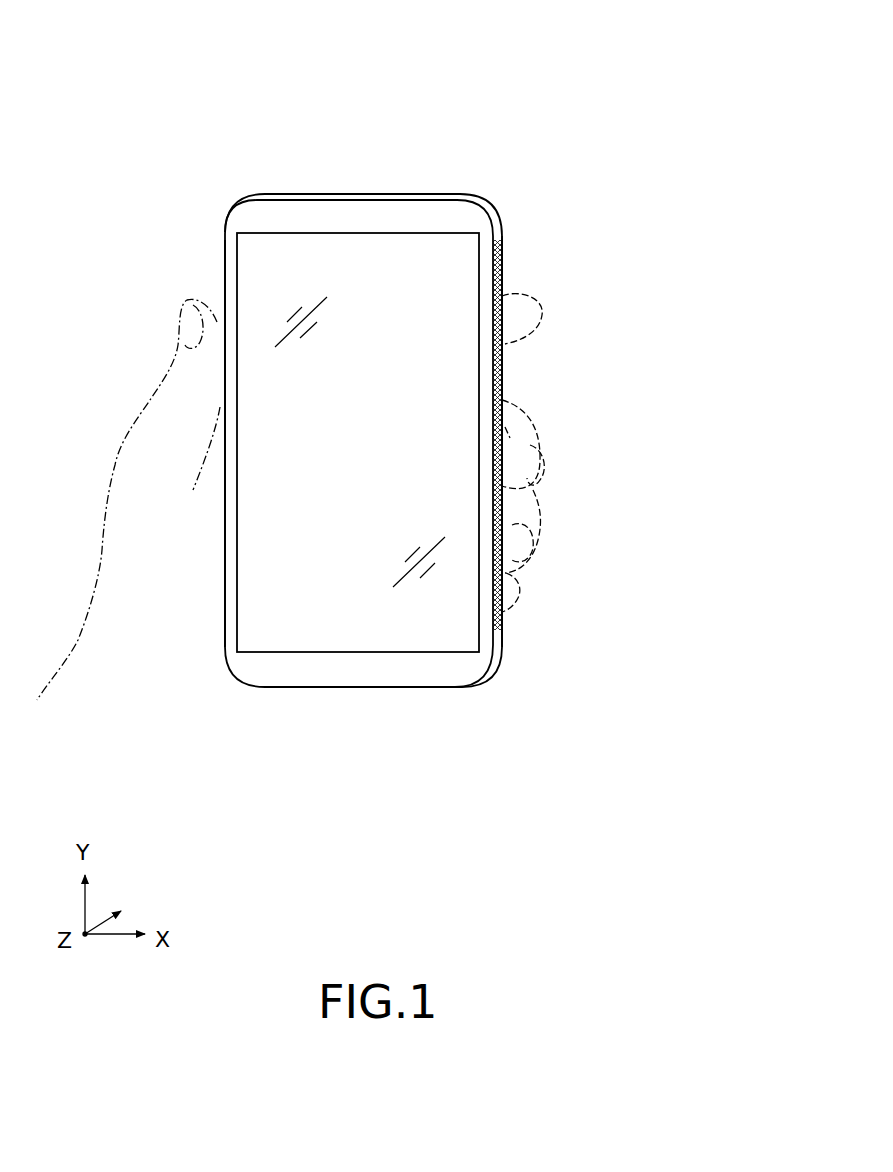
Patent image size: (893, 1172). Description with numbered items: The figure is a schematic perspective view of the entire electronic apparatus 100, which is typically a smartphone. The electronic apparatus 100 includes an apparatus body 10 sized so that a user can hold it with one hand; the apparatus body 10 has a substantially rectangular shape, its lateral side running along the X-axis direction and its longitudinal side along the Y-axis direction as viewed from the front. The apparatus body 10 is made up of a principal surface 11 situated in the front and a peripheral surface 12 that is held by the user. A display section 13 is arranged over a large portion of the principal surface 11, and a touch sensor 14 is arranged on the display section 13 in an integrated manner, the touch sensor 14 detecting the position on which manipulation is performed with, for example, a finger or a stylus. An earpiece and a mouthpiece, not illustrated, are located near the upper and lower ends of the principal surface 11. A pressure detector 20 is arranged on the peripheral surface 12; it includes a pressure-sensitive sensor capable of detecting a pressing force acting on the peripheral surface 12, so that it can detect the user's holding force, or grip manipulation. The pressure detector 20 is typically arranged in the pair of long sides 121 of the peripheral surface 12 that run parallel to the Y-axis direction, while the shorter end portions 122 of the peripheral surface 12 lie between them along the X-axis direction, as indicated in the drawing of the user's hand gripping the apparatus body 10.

The electronic apparatus 100 is at (257, 96).
The apparatus body 10 is at (226, 212).
The principal surface 11 is at (318, 216).
The peripheral surface 12 is at (576, 212).
The long sides 121 is at (500, 242).
The end portion 122 is at (450, 194).
The display section 13 is at (272, 264).
The touch sensor 14 is at (358, 442).
The pressure detector 20 is at (502, 370).